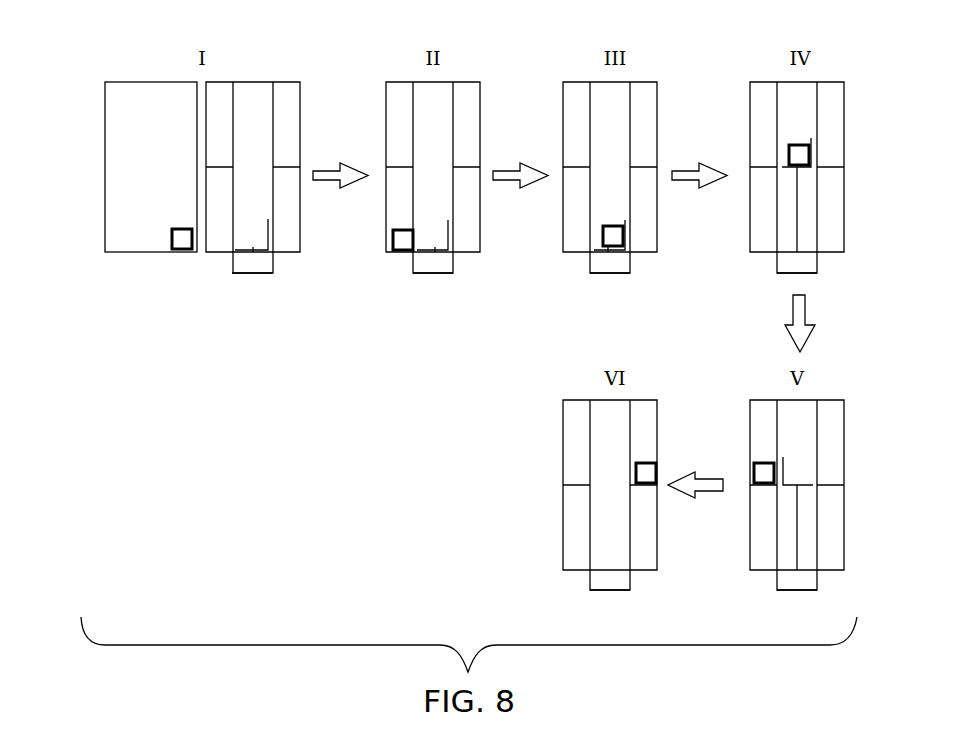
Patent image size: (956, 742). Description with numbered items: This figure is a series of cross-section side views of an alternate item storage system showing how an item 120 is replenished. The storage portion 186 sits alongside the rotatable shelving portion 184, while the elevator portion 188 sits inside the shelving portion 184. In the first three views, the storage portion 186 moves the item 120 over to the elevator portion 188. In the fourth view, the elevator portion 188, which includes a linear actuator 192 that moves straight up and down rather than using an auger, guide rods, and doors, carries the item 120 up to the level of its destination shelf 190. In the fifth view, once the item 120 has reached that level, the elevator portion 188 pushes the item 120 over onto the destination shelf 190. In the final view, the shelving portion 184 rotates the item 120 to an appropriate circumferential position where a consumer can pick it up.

The item 120 is at (172, 239).
The shelving portion 184 is at (300, 100).
The storage portion 186 is at (132, 74).
The elevator portion 188 is at (246, 289).
The destination shelf 190 is at (285, 167).
The linear actuator 192 is at (273, 254).